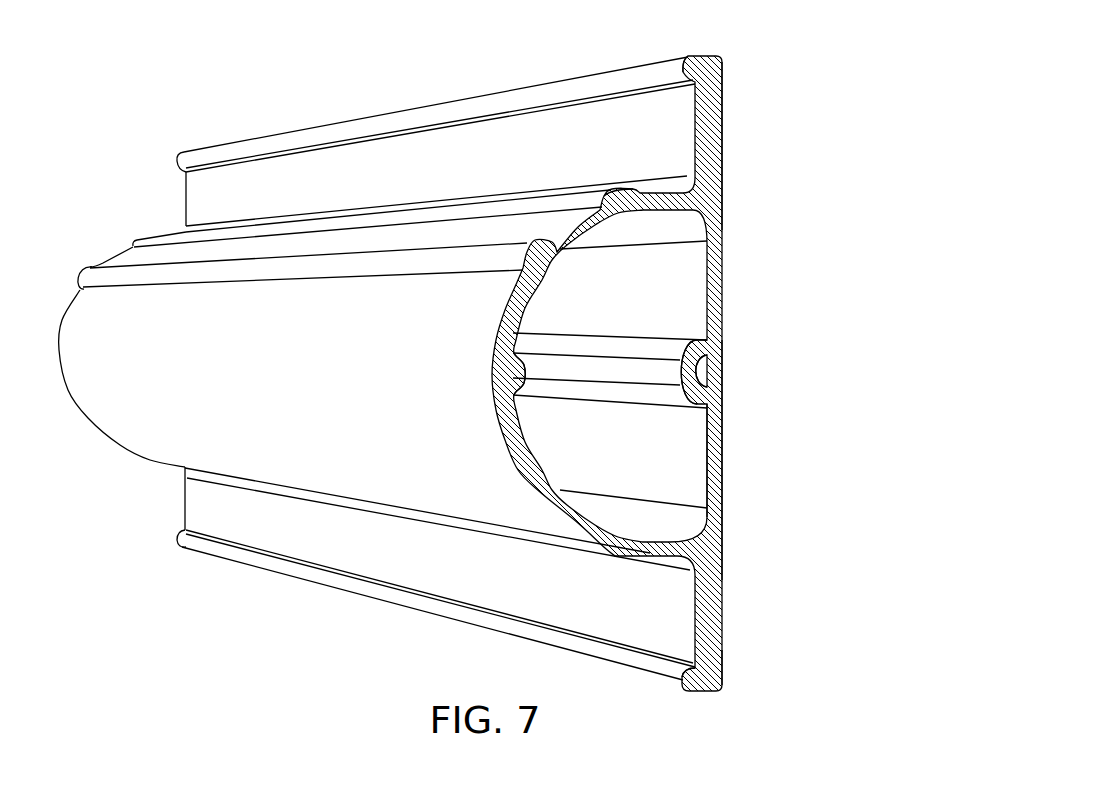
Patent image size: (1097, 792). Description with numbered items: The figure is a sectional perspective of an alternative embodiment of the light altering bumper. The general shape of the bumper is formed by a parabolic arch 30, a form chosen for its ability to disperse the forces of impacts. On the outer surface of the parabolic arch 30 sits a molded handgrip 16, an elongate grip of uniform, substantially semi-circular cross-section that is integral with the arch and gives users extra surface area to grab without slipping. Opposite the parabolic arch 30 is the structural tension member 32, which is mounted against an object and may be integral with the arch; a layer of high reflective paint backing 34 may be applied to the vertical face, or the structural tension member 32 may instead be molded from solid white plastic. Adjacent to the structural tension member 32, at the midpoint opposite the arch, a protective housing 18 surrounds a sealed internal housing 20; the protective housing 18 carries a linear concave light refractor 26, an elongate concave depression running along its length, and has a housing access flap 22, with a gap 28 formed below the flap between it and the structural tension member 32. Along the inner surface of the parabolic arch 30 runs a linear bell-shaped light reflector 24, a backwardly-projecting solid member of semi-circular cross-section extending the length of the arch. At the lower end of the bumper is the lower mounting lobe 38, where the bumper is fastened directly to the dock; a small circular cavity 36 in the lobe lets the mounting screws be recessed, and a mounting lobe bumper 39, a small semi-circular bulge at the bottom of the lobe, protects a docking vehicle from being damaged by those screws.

The molded handgrip 16 is at (626, 192).
The protective housing 18 is at (693, 350).
The sealed internal housing 20 is at (703, 370).
The housing access flap 22 is at (718, 383).
The linear bell-shaped light reflector 24 is at (518, 390).
The linear concave light refractor 26 is at (670, 373).
The gap 28 is at (718, 394).
The parabolic arch 30 is at (524, 308).
The structural tension member 32 is at (718, 437).
The high reflective paint backing 34 is at (724, 197).
The small circular cavity 36 is at (711, 130).
The lower mounting lobe 38 is at (724, 76).
The mounting lobe bumper 39 is at (684, 63).